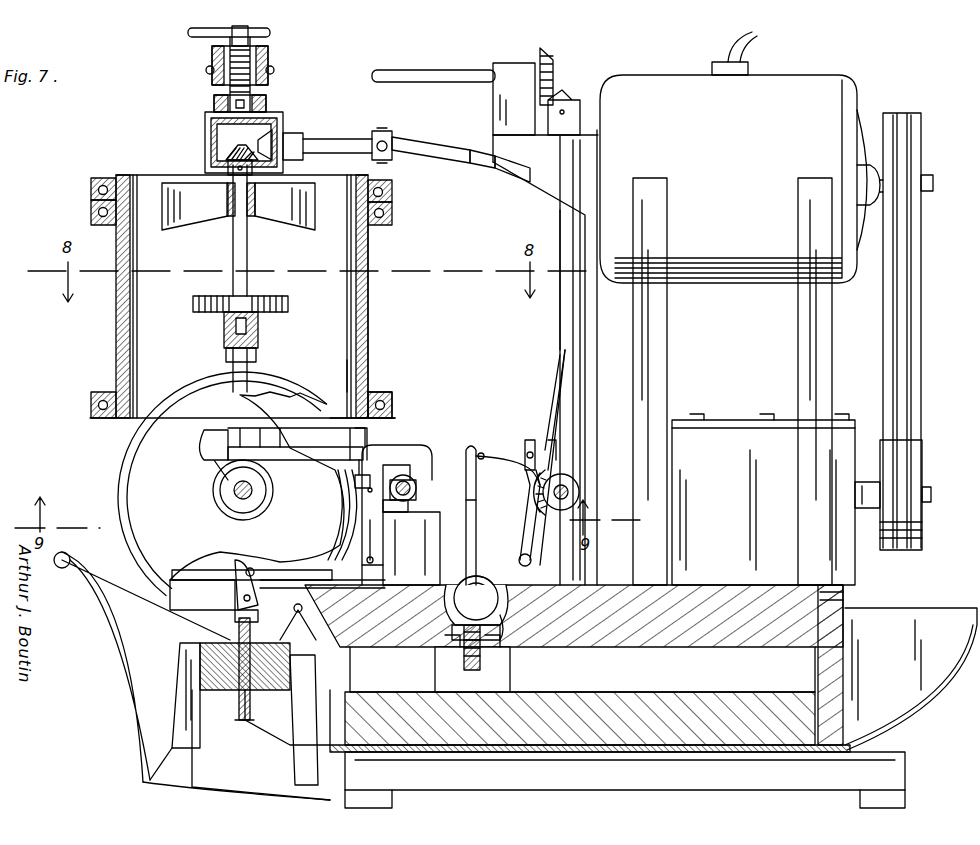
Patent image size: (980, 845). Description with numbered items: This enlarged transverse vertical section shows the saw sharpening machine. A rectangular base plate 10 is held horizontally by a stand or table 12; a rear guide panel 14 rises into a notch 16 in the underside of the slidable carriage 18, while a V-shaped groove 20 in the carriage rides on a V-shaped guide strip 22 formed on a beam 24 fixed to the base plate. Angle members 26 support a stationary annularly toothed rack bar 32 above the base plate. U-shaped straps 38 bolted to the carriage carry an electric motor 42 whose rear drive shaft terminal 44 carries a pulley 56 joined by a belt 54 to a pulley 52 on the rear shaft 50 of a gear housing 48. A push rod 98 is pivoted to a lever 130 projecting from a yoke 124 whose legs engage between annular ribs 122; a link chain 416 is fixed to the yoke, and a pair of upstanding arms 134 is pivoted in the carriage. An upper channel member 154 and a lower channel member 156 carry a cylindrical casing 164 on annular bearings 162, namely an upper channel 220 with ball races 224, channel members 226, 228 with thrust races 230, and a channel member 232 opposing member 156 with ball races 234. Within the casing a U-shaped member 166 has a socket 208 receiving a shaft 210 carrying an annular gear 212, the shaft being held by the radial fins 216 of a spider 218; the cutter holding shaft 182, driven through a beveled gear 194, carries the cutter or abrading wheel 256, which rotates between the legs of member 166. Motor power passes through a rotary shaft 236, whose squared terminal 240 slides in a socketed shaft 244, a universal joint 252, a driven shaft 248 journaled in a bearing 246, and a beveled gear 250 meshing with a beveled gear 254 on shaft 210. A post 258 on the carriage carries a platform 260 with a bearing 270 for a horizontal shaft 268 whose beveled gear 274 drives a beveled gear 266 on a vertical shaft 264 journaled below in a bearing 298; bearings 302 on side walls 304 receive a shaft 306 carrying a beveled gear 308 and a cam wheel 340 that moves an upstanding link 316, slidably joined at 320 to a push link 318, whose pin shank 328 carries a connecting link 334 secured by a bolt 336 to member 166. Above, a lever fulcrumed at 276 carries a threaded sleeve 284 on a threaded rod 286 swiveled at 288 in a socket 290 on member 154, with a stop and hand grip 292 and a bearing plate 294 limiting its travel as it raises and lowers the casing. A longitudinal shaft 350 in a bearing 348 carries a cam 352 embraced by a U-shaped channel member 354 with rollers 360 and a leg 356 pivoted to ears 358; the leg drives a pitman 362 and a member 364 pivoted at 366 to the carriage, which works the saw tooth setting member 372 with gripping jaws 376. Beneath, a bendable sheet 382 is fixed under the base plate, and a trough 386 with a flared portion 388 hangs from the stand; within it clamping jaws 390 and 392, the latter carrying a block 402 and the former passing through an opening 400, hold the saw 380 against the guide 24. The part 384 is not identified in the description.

The base 10 is at (650, 735).
The base plate 12 is at (895, 770).
The side wall 14 is at (840, 672).
The support block 16 is at (812, 632).
The table plate 18 is at (650, 640).
The wedge 20 is at (298, 622).
The side member 22 is at (300, 658).
The pin 24 is at (270, 690).
The block 26 is at (510, 672).
The shaft 32 is at (460, 592).
The motor legs 38 is at (668, 400).
The motor 42 is at (795, 82).
The motor shaft 44 is at (921, 193).
The housing 48 is at (856, 576).
The shaft 50 is at (931, 494).
The pulley 52 is at (922, 536).
The belt 54 is at (915, 370).
The bolt 56 is at (916, 180).
The wire 98 is at (481, 453).
The boss 122 is at (448, 608).
The base of boss 124 is at (505, 592).
The lever 130 is at (478, 498).
The flange 134 is at (500, 618).
The gear housing 154 is at (205, 133).
The frame bottom 156 is at (392, 405).
The bearing plate 162 is at (96, 248).
The frame plate 164 is at (368, 313).
The hub 166 is at (258, 338).
The cam hub 182 is at (222, 492).
The cam shaft 194 is at (248, 500).
The collar 208 is at (236, 328).
The shaft 210 is at (248, 256).
The gear 212 is at (278, 297).
The hub 216 is at (300, 230).
The arm 218 is at (222, 218).
The bearing block 220 is at (91, 180).
The bearing 224 is at (100, 191).
The arm 226 is at (310, 225).
The bearing block 228 is at (385, 228).
The bearing plate 230 is at (370, 235).
The frame plate 232 is at (366, 392).
The bearing block 234 is at (382, 394).
The link 236 is at (505, 172).
The link 240 is at (468, 163).
The link arm 244 is at (428, 150).
The shaft end 246 is at (298, 135).
The shaft 248 is at (340, 139).
The bevel gear 250 is at (260, 140).
The universal joint 252 is at (386, 136).
The bearing 254 is at (220, 160).
The cam 256 is at (130, 478).
The column 258 is at (580, 325).
The bracket 260 is at (545, 357).
The brace 264 is at (560, 230).
The gear 266 is at (572, 96).
The rod 268 is at (425, 70).
The bracket 270 is at (505, 63).
The gear 274 is at (556, 55).
The pin 276 is at (272, 70).
The clamp body 284 is at (212, 62).
The screw 286 is at (212, 88).
The clamp base 288 is at (214, 104).
The nut 290 is at (262, 104).
The screw head 292 is at (255, 40).
The handle 294 is at (215, 48).
The link 298 is at (552, 420).
The gear 302 is at (563, 480).
The link 304 is at (565, 400).
The link 306 is at (561, 512).
The gear segment 308 is at (516, 492).
The rod 316 is at (525, 526).
The lever 318 is at (458, 448).
The pin 320 is at (530, 440).
The cam surface 328 is at (338, 400).
The bar 334 is at (288, 440).
The block 336 is at (225, 452).
The pin 340 is at (552, 455).
The housing 348 is at (410, 545).
The pin 350 is at (412, 478).
The block 352 is at (400, 517).
The bracket 354 is at (385, 448).
The follower 356 is at (345, 535).
The pin 358 is at (383, 555).
The nut 360 is at (352, 485).
The rod 362 is at (322, 593).
The link 364 is at (260, 592).
The plate 366 is at (252, 572).
The block 372 is at (202, 595).
The latch 376 is at (235, 620).
The pin end 380 is at (239, 700).
The plate 382 is at (550, 752).
The guard 384 is at (945, 700).
The strap 386 is at (128, 690).
The loop 388 is at (108, 608).
The block 390 is at (295, 740).
The bottom 392 is at (172, 758).
The plate 400 is at (378, 695).
The block 402 is at (205, 657).
The bolt 416 is at (470, 672).